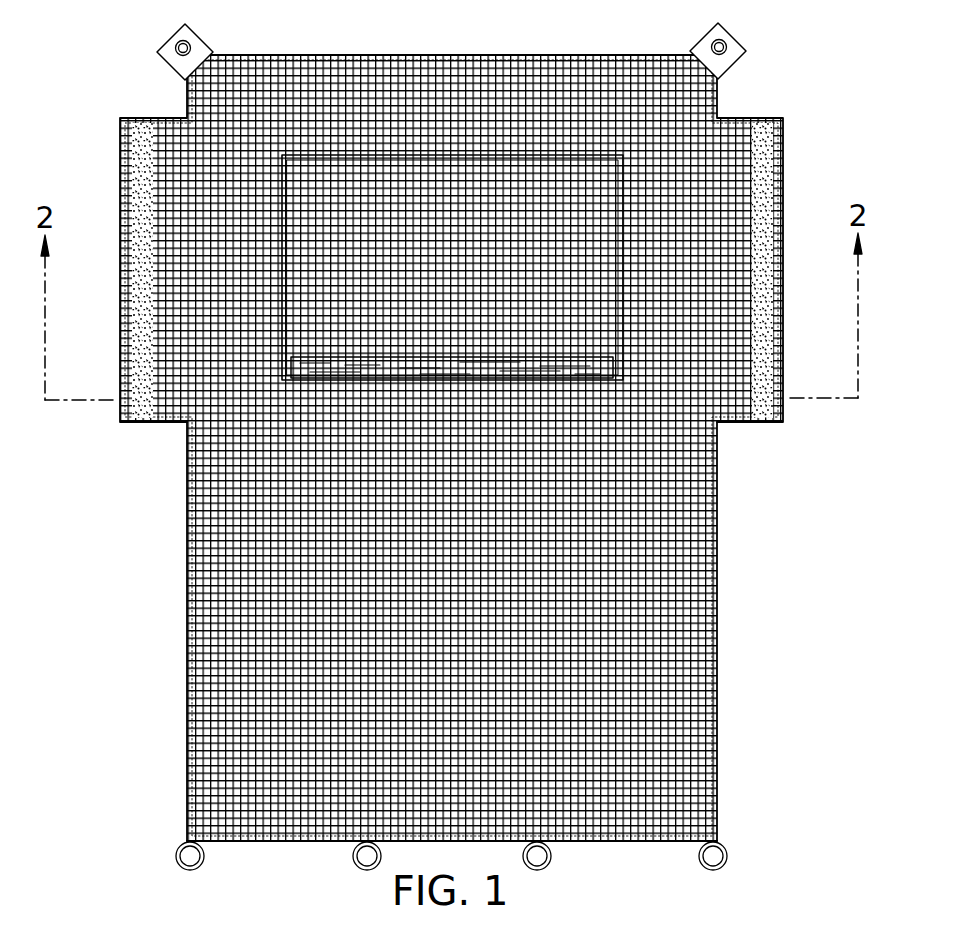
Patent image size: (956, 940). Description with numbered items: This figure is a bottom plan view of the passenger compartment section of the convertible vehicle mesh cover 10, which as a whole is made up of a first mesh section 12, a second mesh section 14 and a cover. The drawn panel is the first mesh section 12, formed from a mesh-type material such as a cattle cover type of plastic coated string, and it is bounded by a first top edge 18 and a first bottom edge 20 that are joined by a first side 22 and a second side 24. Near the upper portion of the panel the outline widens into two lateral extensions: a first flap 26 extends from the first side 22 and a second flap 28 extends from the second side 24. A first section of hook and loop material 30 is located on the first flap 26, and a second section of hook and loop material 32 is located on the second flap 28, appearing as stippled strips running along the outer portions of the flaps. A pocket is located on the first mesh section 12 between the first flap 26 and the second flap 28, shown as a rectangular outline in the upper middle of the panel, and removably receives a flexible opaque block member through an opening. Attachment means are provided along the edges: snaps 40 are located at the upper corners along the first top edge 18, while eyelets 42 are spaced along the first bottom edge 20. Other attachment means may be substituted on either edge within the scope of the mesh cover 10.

The convertible vehicle mesh cover 10 is at (132, 682).
The first mesh section 12 is at (185, 565).
The second mesh section 14 is at (452, 267).
The first top edge 18 is at (407, 55).
The first bottom edge 20 is at (575, 842).
The first side 22 is at (718, 659).
The second side 24 is at (187, 706).
The first flap 26 is at (786, 200).
The second flap 28 is at (120, 190).
The first section of hook and loop material 30 is at (762, 421).
The second section of hook and loop material 32 is at (143, 418).
The snaps 40 is at (180, 48).
The eyelets 42 is at (204, 860).